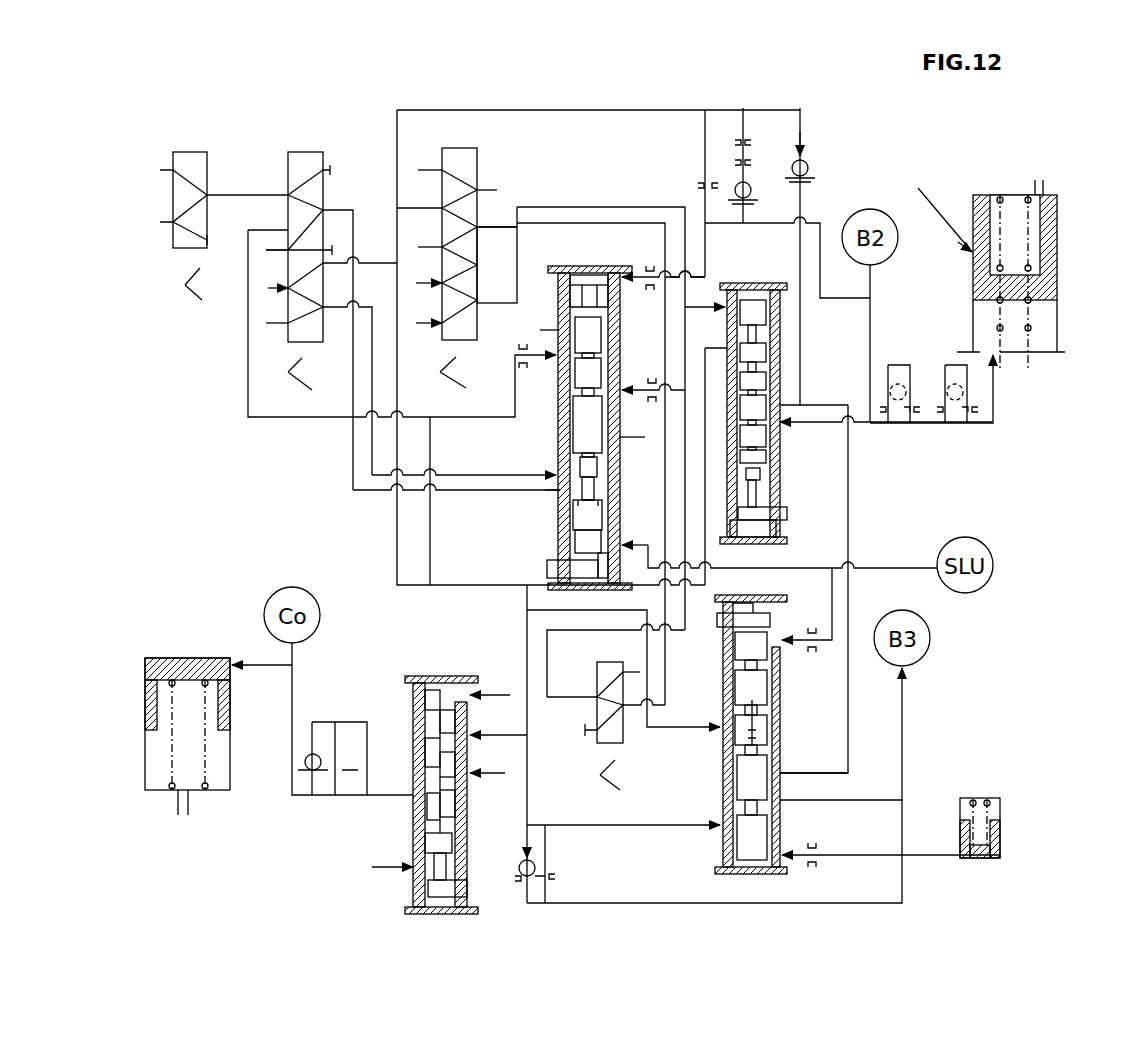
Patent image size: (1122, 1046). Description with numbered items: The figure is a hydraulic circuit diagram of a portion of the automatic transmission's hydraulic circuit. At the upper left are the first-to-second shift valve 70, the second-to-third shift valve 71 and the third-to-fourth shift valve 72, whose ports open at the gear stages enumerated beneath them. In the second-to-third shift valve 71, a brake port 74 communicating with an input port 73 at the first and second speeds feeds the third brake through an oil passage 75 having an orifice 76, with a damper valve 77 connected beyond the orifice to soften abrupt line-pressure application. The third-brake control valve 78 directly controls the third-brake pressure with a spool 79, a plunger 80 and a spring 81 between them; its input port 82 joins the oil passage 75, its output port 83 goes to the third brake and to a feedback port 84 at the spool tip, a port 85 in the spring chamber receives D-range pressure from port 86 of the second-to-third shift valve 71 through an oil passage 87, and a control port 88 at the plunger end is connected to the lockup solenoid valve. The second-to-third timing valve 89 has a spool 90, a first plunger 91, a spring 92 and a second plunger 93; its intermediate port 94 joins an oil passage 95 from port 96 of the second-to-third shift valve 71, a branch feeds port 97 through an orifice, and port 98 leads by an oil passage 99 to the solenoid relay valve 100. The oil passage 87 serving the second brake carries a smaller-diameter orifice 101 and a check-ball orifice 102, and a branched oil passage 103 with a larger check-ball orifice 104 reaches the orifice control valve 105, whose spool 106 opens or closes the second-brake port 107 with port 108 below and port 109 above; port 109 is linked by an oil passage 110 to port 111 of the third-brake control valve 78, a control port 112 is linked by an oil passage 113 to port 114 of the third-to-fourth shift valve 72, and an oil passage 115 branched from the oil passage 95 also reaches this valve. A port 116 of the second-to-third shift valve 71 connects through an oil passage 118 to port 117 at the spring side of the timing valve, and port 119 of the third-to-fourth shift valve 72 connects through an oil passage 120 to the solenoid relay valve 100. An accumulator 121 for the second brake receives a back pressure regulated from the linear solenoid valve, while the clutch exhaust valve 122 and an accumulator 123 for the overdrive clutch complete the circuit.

The 1–2 shift valve 70 is at (192, 148).
The 2–3 shift valve 71 is at (308, 148).
The 3–4 shift valve 72 is at (480, 152).
The input port 73 is at (288, 195).
The brake port 74 is at (323, 210).
The oil passage 75 is at (372, 475).
The orifice 76 is at (550, 865).
The damper valve 77 is at (998, 818).
The B-3 control valve 78 is at (692, 862).
The spool 79 is at (774, 750).
The plunger 80 is at (770, 675).
The spring 81 is at (730, 710).
The input port 82 is at (720, 828).
The output port 83 is at (778, 802).
The feedback port 84 is at (770, 866).
The port 85 is at (770, 735).
The port 86 is at (345, 263).
The oil passage 87 is at (430, 110).
The control port 88 is at (772, 618).
The 2–3 timing valve 89 is at (585, 266).
The spool 90 is at (605, 350).
The first plunger 91 is at (604, 522).
The spring 92 is at (604, 497).
The second plunger 93 is at (578, 266).
The intermediate port 94 is at (548, 416).
The oil passage 95 is at (262, 417).
The port 96 is at (288, 235).
The port 97 is at (556, 360).
The port 98 is at (612, 387).
The oil passage 99 is at (547, 650).
The solenoid relay valve 100 is at (592, 752).
The smaller-diameter orifice 101 is at (694, 185).
The orifice having a check ball 102 is at (735, 165).
The oil passage 103 is at (800, 128).
The larger-diameter orifice having a check ball 104 is at (808, 172).
The orifice control valve 105 is at (780, 535).
The spool 106 is at (770, 330).
The port 107 is at (782, 428).
The port 108 is at (780, 455).
The port 109 is at (782, 405).
The oil passage 110 is at (848, 520).
The port 111 is at (782, 773).
The control port 112 is at (720, 307).
The oil passage 113 is at (552, 207).
The port 114 is at (497, 265).
The oil passage 115 is at (430, 560).
The port 116 is at (340, 307).
The port 117 is at (545, 489).
The oil passage 118 is at (353, 490).
The port 119 is at (482, 227).
The oil passage 120 is at (600, 223).
The accumulator 121 is at (1057, 325).
The C-0 exhaust valve 122 is at (428, 676).
The accumulator 123 is at (230, 760).